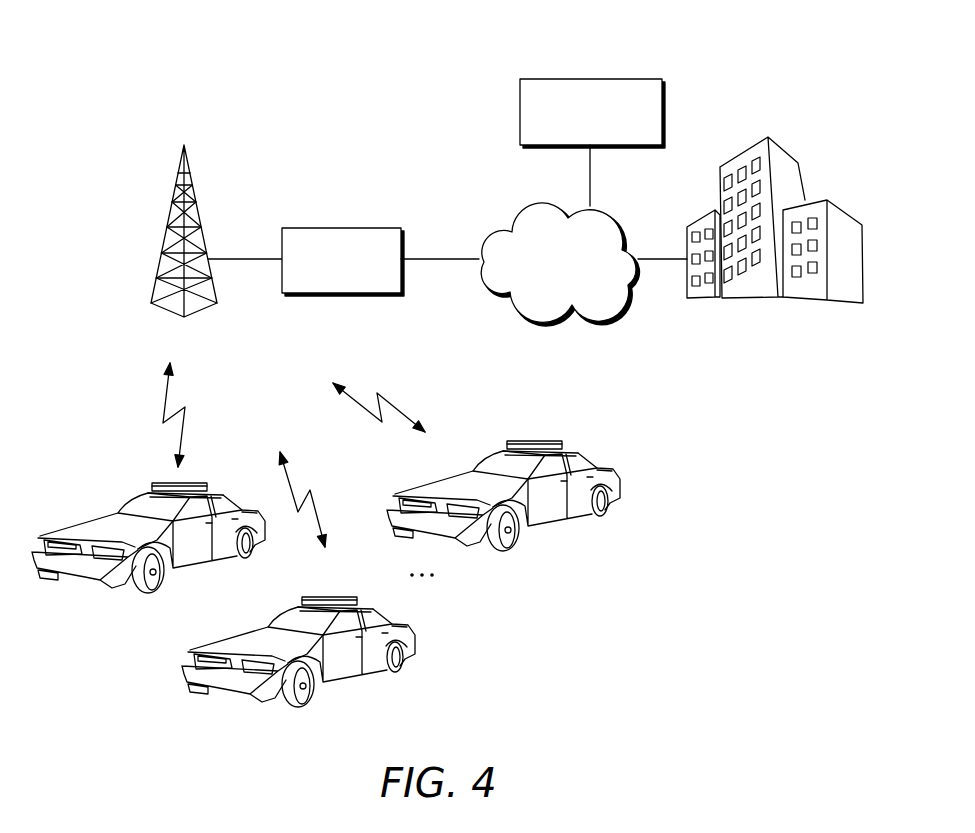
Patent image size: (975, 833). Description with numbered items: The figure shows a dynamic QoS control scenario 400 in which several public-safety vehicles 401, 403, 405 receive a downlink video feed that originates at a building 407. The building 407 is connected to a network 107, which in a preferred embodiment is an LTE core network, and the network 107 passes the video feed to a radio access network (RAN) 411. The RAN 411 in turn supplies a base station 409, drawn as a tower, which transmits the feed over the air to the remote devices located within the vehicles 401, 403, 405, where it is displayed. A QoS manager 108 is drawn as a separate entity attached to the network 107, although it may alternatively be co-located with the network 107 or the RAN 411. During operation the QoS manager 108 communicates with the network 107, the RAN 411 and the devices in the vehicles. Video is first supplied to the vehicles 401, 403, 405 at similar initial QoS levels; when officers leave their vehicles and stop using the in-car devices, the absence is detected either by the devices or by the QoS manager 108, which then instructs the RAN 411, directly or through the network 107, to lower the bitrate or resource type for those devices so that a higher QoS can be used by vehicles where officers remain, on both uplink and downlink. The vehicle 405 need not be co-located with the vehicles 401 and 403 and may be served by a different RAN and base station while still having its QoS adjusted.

The communication system 400 is at (141, 29).
The public-safety vehicle 401 is at (135, 502).
The public-safety vehicle 403 is at (285, 617).
The public-safety vehicle 405 is at (488, 460).
The building 407 is at (742, 150).
The base station 409 is at (172, 213).
The radio access network (RAN) 411 is at (313, 227).
The network 107 is at (507, 218).
The QoS manager 108 is at (552, 78).